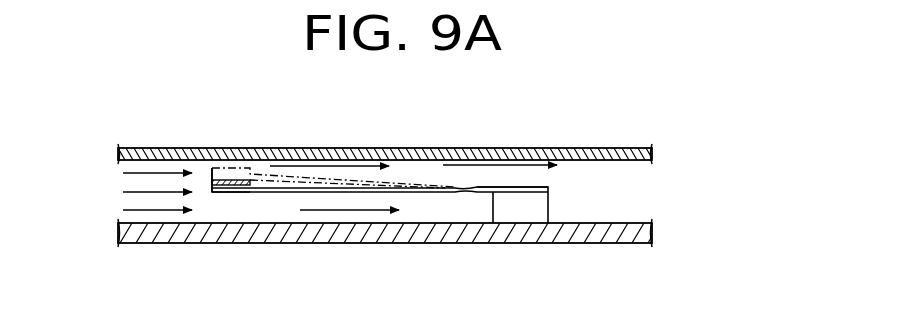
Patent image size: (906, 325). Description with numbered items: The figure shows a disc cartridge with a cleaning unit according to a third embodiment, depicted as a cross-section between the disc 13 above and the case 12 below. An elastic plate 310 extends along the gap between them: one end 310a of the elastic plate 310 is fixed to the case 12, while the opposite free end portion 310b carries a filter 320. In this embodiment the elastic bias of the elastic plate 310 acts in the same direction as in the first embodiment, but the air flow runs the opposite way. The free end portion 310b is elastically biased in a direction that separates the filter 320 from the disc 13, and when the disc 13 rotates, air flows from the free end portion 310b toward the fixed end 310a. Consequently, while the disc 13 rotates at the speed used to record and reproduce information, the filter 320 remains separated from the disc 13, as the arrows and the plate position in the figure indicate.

The disc 13 is at (395, 148).
The case 12 is at (546, 243).
The elastic plate 310 is at (449, 207).
The end of the elastic plate fixed to the case 310a is at (540, 187).
The free end portion of the elastic plate 310b is at (222, 188).
The filter 320 is at (230, 185).